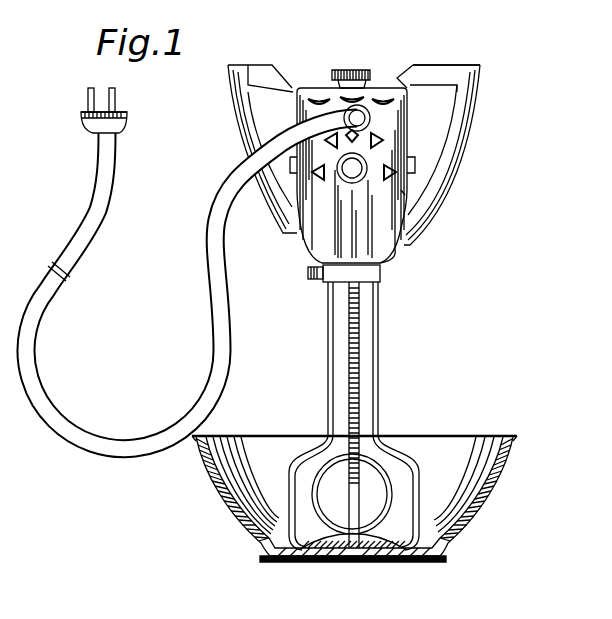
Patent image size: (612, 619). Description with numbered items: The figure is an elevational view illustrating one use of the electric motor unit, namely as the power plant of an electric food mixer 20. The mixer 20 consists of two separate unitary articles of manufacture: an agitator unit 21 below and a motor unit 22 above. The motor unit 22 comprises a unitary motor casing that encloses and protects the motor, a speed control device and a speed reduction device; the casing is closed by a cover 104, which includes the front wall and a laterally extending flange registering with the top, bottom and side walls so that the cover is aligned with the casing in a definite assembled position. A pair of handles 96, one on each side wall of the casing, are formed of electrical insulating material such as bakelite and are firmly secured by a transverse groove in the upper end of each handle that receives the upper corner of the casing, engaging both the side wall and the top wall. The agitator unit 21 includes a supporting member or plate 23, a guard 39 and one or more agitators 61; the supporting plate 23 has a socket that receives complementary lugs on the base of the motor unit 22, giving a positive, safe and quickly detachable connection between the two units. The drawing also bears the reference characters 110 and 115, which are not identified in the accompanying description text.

The electric food mixer 20 is at (490, 63).
The handles 96 is at (236, 65).
The motor housing 110 is at (393, 144).
The cover 104 is at (397, 198).
The motor unit 22 is at (418, 246).
The supporting plate 23 is at (380, 278).
The clamping screw 115 is at (308, 273).
The agitator unit 21 is at (388, 391).
The guard 39 is at (319, 366).
The agitators 61 is at (321, 453).